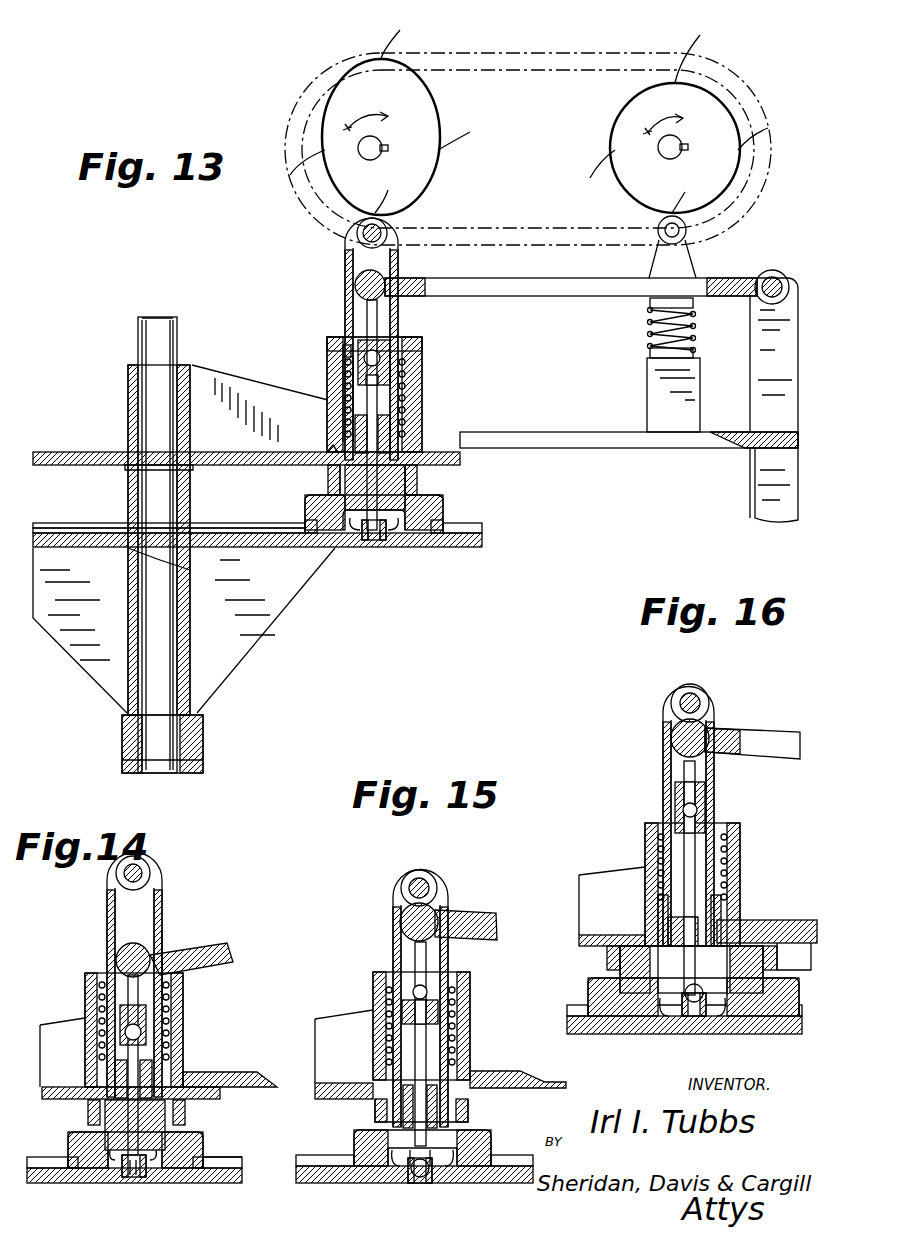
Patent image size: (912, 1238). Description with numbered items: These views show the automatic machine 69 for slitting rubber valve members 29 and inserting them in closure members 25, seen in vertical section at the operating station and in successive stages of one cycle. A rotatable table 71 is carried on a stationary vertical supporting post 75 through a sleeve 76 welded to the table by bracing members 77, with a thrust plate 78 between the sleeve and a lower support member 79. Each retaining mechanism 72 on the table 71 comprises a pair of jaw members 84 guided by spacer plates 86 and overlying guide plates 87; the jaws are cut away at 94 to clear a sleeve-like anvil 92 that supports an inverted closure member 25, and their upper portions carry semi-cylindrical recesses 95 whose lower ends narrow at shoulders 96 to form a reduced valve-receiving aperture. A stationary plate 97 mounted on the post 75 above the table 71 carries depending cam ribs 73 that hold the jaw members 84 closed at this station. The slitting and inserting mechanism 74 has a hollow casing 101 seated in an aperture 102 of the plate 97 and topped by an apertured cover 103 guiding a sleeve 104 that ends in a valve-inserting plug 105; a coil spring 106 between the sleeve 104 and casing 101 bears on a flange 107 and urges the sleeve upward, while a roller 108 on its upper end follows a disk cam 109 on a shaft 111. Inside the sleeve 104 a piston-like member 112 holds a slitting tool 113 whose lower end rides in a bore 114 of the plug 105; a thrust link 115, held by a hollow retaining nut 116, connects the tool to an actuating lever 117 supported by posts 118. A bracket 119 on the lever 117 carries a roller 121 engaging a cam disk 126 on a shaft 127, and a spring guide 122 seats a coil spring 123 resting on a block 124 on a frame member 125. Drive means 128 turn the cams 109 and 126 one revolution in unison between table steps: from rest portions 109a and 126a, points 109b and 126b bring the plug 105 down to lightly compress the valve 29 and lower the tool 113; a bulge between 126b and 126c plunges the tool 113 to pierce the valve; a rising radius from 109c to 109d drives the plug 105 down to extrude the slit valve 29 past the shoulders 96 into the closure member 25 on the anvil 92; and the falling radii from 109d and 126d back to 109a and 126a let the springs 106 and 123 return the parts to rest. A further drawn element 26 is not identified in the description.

In FIG. 13, the closure member 25 is at (374, 548).
In FIG. 14, the closure member 25 is at (128, 1183).
In FIG. 15, the closure member 25 is at (455, 1160).
In FIG. 16, the closure member 25 is at (655, 1016).
In FIG. 14, the orifice 26 is at (133, 1183).
In FIG. 13, the rubber valve member 29 is at (443, 500).
In FIG. 14, the rubber valve member 29 is at (203, 1130).
In FIG. 15, the rubber valve member 29 is at (412, 1184).
In FIG. 16, the rubber valve member 29 is at (698, 986).
In FIG. 13, the machine 69 is at (125, 420).
In FIG. 13, the rotatable table 71 is at (482, 538).
In FIG. 14, the rotatable table 71 is at (75, 1183).
In FIG. 13, the retaining mechanism 72 is at (300, 497).
In FIG. 14, the retaining mechanism 72 is at (68, 1135).
In FIG. 15, the retaining mechanism 72 is at (490, 1148).
In FIG. 13, the stationary cam members 73 is at (328, 478).
In FIG. 14, the stationary cam members 73 is at (88, 1113).
In FIG. 16, the stationary cam members 73 is at (607, 960).
In FIG. 13, the valve slitting and inserting mechanism 74 is at (325, 338).
In FIG. 14, the valve slitting and inserting mechanism 74 is at (162, 920).
In FIG. 13, the supporting post 75 is at (145, 317).
In FIG. 13, the sleeve 76 is at (128, 580).
In FIG. 13, the bracing members 77 is at (100, 660).
In FIG. 13, the thrust plate 78 is at (122, 718).
In FIG. 13, the lower support member 79 is at (130, 758).
In FIG. 13, the jaw members 84 is at (312, 547).
In FIG. 14, the jaw members 84 is at (200, 1150).
In FIG. 15, the jaw members 84 is at (360, 1183).
In FIG. 16, the jaw members 84 is at (588, 990).
In FIG. 13, the spacer plates 86 is at (62, 523).
In FIG. 13, the guide plates 87 is at (92, 528).
In FIG. 13, the anvil 92 is at (385, 545).
In FIG. 14, the anvil 92 is at (145, 1183).
In FIG. 15, the anvil 92 is at (434, 1183).
In FIG. 16, the anvil 92 is at (690, 1016).
In FIG. 14, the cut-away portion 94 is at (188, 1183).
In FIG. 16, the cut-away portion 94 is at (628, 1016).
In FIG. 13, the semi-cylindrical recess 95 is at (340, 505).
In FIG. 15, the semi-cylindrical recess 95 is at (455, 1135).
In FIG. 16, the semi-cylindrical recess 95 is at (660, 975).
In FIG. 13, the shoulder 96 is at (340, 545).
In FIG. 14, the shoulder 96 is at (175, 1140).
In FIG. 15, the shoulder 96 is at (354, 1139).
In FIG. 16, the shoulder 96 is at (730, 1016).
In FIG. 13, the stationary plate 97 is at (62, 452).
In FIG. 14, the stationary plate 97 is at (62, 1087).
In FIG. 15, the stationary plate 97 is at (440, 1085).
In FIG. 16, the stationary plate 97 is at (580, 935).
In FIG. 13, the hollow casing 101 is at (327, 402).
In FIG. 14, the hollow casing 101 is at (85, 1040).
In FIG. 15, the hollow casing 101 is at (462, 1015).
In FIG. 16, the hollow casing 101 is at (740, 893).
In FIG. 13, the aperture 102 is at (327, 450).
In FIG. 13, the apertured cover 103 is at (327, 342).
In FIG. 13, the sleeve 104 is at (345, 262).
In FIG. 14, the sleeve 104 is at (107, 910).
In FIG. 15, the sleeve 104 is at (393, 919).
In FIG. 16, the sleeve 104 is at (663, 794).
In FIG. 13, the valve-inserting plug 105 is at (392, 435).
In FIG. 14, the valve-inserting plug 105 is at (165, 1060).
In FIG. 15, the valve-inserting plug 105 is at (403, 1113).
In FIG. 16, the valve-inserting plug 105 is at (660, 905).
In FIG. 13, the coil spring 106 is at (343, 372).
In FIG. 14, the coil spring 106 is at (100, 1000).
In FIG. 15, the coil spring 106 is at (458, 1045).
In FIG. 16, the coil spring 106 is at (740, 865).
In FIG. 13, the flange 107 is at (343, 352).
In FIG. 13, the cam follower roller 108 is at (357, 233).
In FIG. 14, the cam follower roller 108 is at (140, 857).
In FIG. 15, the cam follower roller 108 is at (430, 870).
In FIG. 16, the cam follower roller 108 is at (672, 692).
In FIG. 13, the disk cam 109 is at (425, 172).
In FIG. 13, the rest portion of cam 109a is at (287, 167).
In FIG. 13, the cam edge portion 109b is at (382, 191).
In FIG. 13, the cam point 109c is at (476, 133).
In FIG. 13, the cam point 109d is at (407, 33).
In FIG. 13, the shaft 111 is at (380, 138).
In FIG. 13, the piston-like member 112 is at (400, 372).
In FIG. 14, the piston-like member 112 is at (165, 1020).
In FIG. 15, the piston-like member 112 is at (400, 1010).
In FIG. 16, the piston-like member 112 is at (710, 820).
In FIG. 13, the slitting tool 113 is at (378, 395).
In FIG. 14, the slitting tool 113 is at (150, 1070).
In FIG. 15, the slitting tool 113 is at (412, 1050).
In FIG. 16, the slitting tool 113 is at (680, 868).
In FIG. 16, the bore 114 is at (675, 925).
In FIG. 13, the thrust link 115 is at (368, 312).
In FIG. 14, the thrust link 115 is at (118, 966).
In FIG. 15, the thrust link 115 is at (415, 958).
In FIG. 16, the thrust link 115 is at (685, 764).
In FIG. 13, the hollow retaining nut 116 is at (395, 336).
In FIG. 13, the actuating lever 117 is at (530, 298).
In FIG. 14, the actuating lever 117 is at (200, 942).
In FIG. 15, the actuating lever 117 is at (480, 918).
In FIG. 16, the actuating lever 117 is at (752, 726).
In FIG. 13, the vertical posts 118 is at (752, 375).
In FIG. 13, the bracket 119 is at (690, 262).
In FIG. 13, the cam follower roller 121 is at (660, 238).
In FIG. 13, the spring guide 122 is at (650, 312).
In FIG. 13, the coil spring 123 is at (650, 346).
In FIG. 13, the block 124 is at (658, 386).
In FIG. 13, the horizontal frame member 125 is at (672, 448).
In FIG. 16, the horizontal frame member 125 is at (775, 923).
In FIG. 13, the cam disk 126 is at (625, 185).
In FIG. 13, the rest portion of cam 126a is at (574, 168).
In FIG. 13, the cam edge portion 126b is at (670, 192).
In FIG. 13, the cam point 126c is at (775, 131).
In FIG. 13, the cam point 126d is at (712, 49).
In FIG. 13, the shaft 127 is at (676, 138).
In FIG. 13, the cyclic actuating means 128 is at (656, 42).